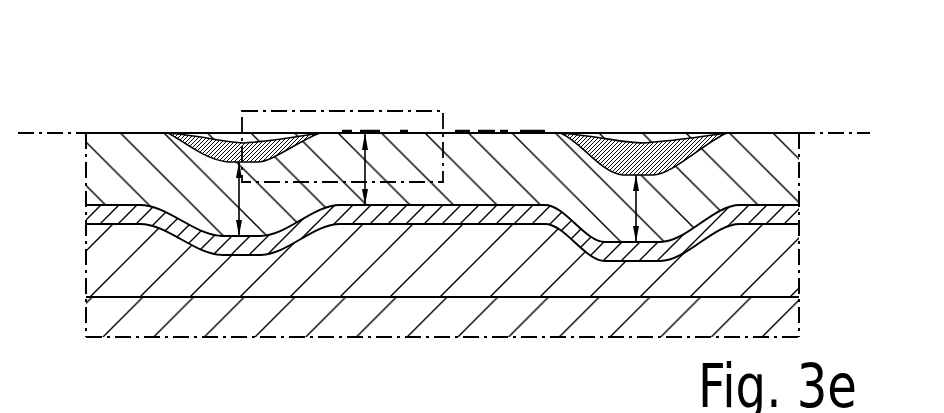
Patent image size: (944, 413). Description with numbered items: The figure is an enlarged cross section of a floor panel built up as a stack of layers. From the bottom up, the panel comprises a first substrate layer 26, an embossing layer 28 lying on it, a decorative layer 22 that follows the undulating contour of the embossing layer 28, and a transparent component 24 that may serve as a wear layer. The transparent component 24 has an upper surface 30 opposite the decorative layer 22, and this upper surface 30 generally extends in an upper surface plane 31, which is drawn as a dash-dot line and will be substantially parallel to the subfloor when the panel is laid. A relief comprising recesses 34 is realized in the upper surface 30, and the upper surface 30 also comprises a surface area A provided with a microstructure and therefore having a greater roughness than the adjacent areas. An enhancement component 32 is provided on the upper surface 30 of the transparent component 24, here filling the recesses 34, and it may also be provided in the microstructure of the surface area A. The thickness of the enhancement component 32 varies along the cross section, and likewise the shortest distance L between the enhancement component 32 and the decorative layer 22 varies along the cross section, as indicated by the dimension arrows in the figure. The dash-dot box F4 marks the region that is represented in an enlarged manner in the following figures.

The decorative layer 22 is at (782, 214).
The transparent component 24 is at (753, 175).
The first substrate layer 26 is at (782, 317).
The embossing layer 28 is at (783, 262).
The upper surface 30 is at (768, 133).
The upper surface plane 31 is at (41, 133).
The enhancement component 32 is at (643, 143).
The recesses 34 is at (647, 170).
The shortest distance between the enhancement component and the decorative layer L is at (239, 197).
The detail region shown enlarged in FIG. 4a-4b F4 is at (444, 112).
The surface area A is at (500, 118).